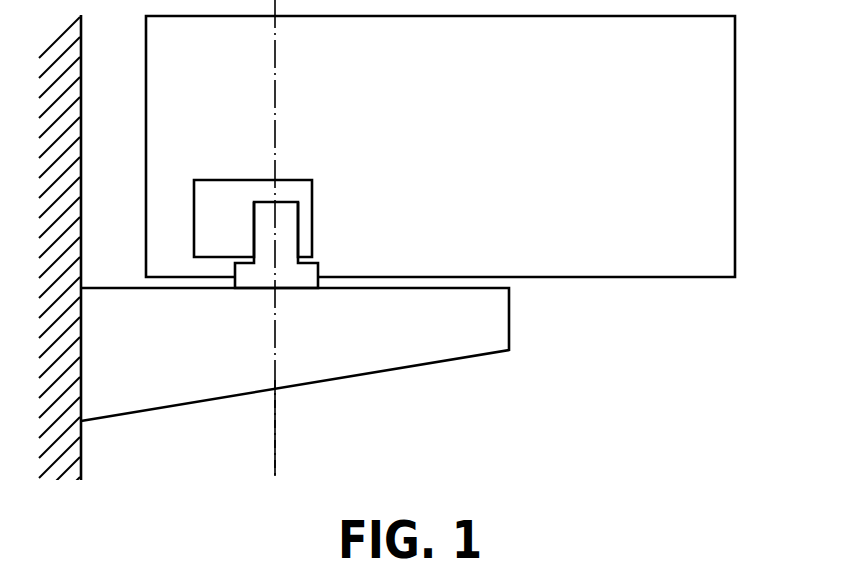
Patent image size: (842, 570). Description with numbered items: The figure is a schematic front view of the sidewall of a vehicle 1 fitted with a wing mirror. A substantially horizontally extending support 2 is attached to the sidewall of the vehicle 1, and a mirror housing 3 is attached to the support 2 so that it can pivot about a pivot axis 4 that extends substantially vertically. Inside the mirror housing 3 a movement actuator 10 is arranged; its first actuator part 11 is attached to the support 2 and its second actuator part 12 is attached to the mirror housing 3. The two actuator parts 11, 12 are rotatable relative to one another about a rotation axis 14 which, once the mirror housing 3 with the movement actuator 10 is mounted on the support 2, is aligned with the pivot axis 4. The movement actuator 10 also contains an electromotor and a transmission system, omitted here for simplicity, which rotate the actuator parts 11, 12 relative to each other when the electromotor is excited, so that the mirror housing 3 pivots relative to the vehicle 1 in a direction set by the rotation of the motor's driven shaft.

The vehicle 1 is at (81, 438).
The support 2 is at (510, 323).
The mirror housing 3 is at (648, 277).
The pivot axis 4 is at (275, 415).
The movement actuator 10 is at (452, 143).
The first actuator part 11 is at (318, 267).
The second actuator part 12 is at (312, 192).
The rotation axis 14 is at (275, 98).